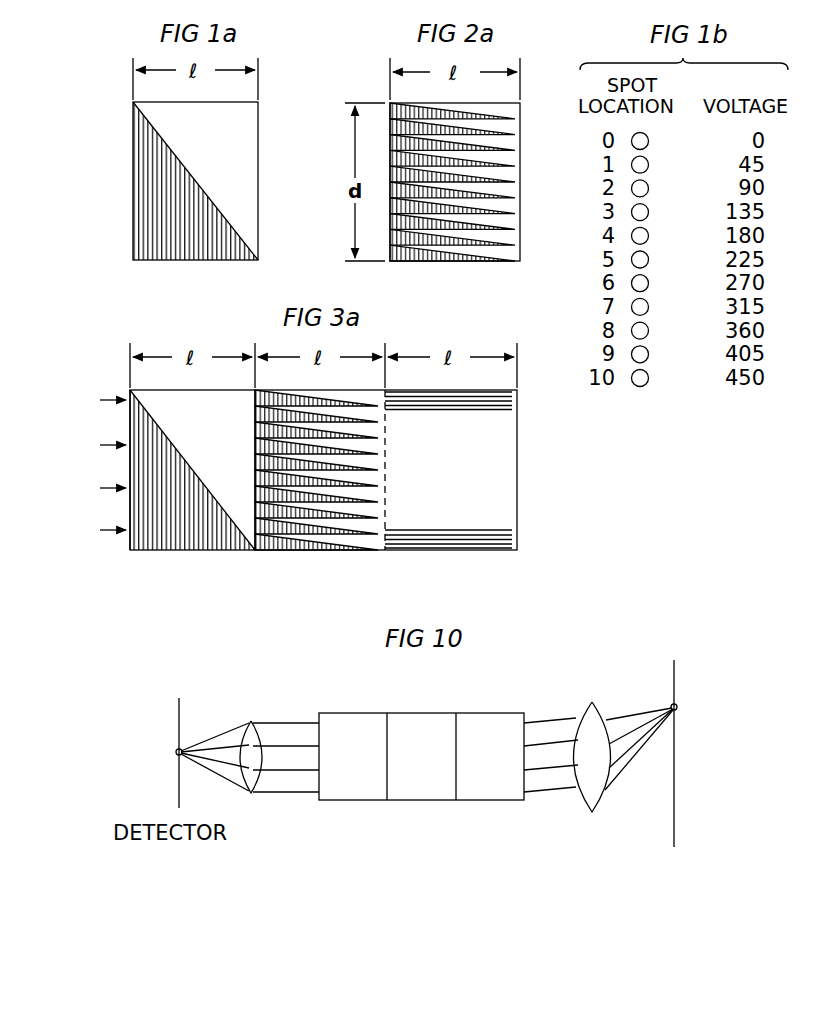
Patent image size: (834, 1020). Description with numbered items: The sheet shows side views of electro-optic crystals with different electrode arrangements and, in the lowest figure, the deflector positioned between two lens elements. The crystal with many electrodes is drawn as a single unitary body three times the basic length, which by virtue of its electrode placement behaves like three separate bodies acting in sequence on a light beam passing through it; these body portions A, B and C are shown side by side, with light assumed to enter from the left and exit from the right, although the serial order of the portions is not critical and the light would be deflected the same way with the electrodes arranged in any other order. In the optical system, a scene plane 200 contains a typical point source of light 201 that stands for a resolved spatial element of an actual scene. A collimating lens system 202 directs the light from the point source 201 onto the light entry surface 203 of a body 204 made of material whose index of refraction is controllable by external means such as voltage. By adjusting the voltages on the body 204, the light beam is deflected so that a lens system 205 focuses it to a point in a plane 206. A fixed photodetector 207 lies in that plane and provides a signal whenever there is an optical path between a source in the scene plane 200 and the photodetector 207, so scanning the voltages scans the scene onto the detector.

In FIG. 3A, the body portion A is at (178, 554).
In FIG. 3A, the body portion B is at (303, 554).
In FIG. 3A, the body portion C is at (433, 554).
In FIG. 10, the scene plane 200 is at (742, 721).
In FIG. 10, the point source of light 201 is at (677, 710).
In FIG. 10, the collimating lens system 202 is at (592, 702).
In FIG. 10, the light entry surface 203 is at (525, 798).
In FIG. 10, the body 204 is at (418, 710).
In FIG. 10, the lens system 205 is at (251, 721).
In FIG. 10, the plane 206 is at (176, 718).
In FIG. 10, the fixed photodetector 207 is at (175, 753).